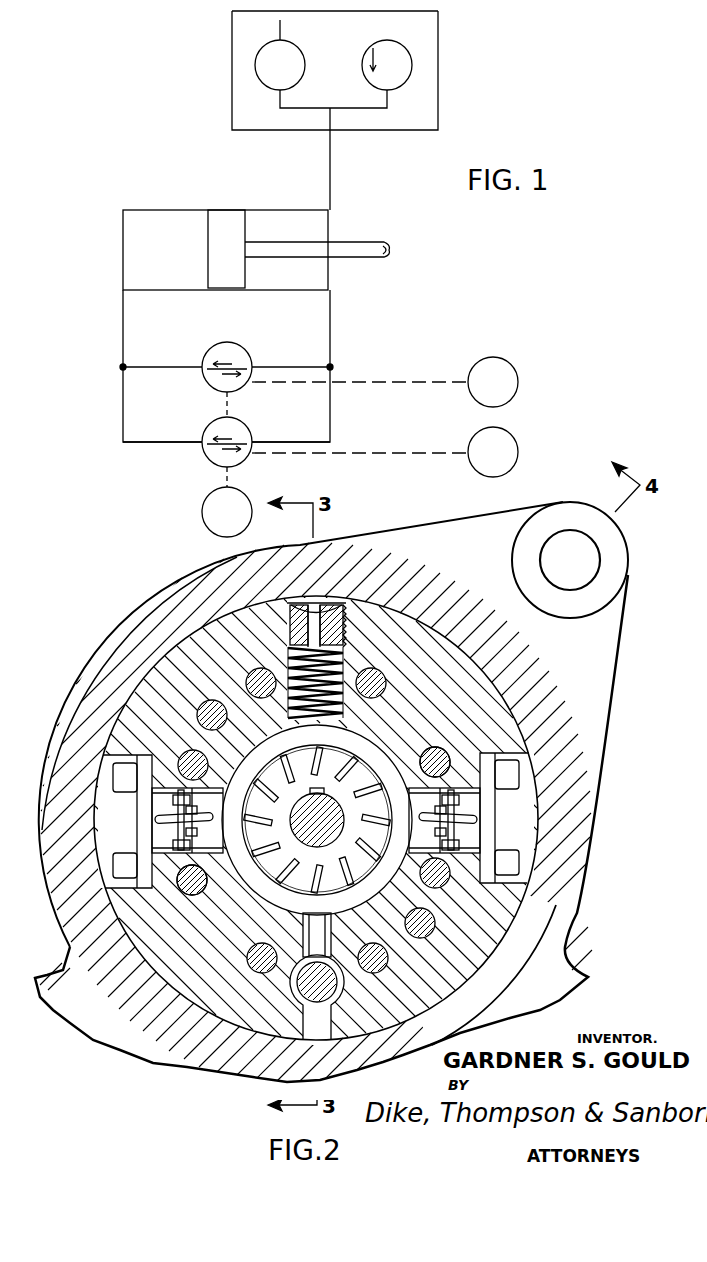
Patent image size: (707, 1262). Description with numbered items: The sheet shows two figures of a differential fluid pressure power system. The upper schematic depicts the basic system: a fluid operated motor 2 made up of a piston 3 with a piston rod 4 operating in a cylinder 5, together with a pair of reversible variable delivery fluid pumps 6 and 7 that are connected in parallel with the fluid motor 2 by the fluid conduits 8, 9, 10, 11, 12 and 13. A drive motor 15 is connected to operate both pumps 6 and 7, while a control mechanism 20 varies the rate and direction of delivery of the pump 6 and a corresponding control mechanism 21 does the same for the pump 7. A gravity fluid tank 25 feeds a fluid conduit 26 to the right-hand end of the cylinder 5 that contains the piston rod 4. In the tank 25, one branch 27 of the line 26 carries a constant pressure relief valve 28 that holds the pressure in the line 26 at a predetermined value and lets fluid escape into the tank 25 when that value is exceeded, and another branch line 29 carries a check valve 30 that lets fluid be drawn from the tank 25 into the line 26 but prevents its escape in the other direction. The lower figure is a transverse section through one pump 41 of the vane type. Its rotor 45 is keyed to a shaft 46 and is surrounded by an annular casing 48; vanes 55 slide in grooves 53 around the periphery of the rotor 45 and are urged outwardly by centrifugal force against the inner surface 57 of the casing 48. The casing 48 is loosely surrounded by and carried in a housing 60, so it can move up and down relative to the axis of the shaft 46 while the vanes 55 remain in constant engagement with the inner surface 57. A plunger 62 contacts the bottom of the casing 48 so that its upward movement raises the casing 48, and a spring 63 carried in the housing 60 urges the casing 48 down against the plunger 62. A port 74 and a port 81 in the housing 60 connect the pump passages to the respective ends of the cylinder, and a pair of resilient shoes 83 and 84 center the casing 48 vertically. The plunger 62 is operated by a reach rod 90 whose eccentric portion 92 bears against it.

In FIG. 1, the fluid operated motor 2 is at (224, 196).
In FIG. 1, the piston 3 is at (208, 246).
In FIG. 2, the piston 3 is at (324, 801).
In FIG. 1, the piston rod 4 is at (273, 240).
In FIG. 1, the cylinder 5 is at (263, 210).
In FIG. 1, the reversible variable delivery fluid pump 6 is at (240, 345).
In FIG. 1, the reversible variable delivery fluid pump 7 is at (240, 419).
In FIG. 1, the fluid conduit 8 is at (123, 320).
In FIG. 1, the fluid conduit 9 is at (177, 367).
In FIG. 1, the fluid conduit 10 is at (163, 442).
In FIG. 1, the fluid conduit 11 is at (330, 320).
In FIG. 1, the fluid conduit 12 is at (303, 367).
In FIG. 1, the fluid conduit 13 is at (303, 442).
In FIG. 1, the drive motor 15 is at (202, 507).
In FIG. 1, the control mechanism 20 is at (513, 366).
In FIG. 1, the control mechanism 21 is at (513, 438).
In FIG. 1, the gravity fluid tank 25 is at (438, 77).
In FIG. 1, the fluid conduit 26 is at (330, 164).
In FIG. 1, the branch 27 is at (305, 101).
In FIG. 1, the constant pressure relief valve 28 is at (305, 58).
In FIG. 1, the branch line 29 is at (357, 108).
In FIG. 1, the check valve 30 is at (400, 88).
In FIG. 2, the pump 41 is at (273, 782).
In FIG. 2, the rotor 45 is at (330, 837).
In FIG. 2, the shaft 46 is at (350, 898).
In FIG. 2, the annular casing 48 is at (417, 958).
In FIG. 2, the grooves 53 is at (305, 764).
In FIG. 2, the vanes 55 is at (316, 746).
In FIG. 2, the inner surface 57 is at (352, 736).
In FIG. 2, the housing 60 is at (483, 697).
In FIG. 2, the plunger 62 is at (317, 932).
In FIG. 2, the spring 63 is at (345, 663).
In FIG. 2, the port 74 is at (425, 749).
In FIG. 2, the port 81 is at (202, 892).
In FIG. 2, the resilient shoe 83 is at (185, 838).
In FIG. 2, the resilient shoe 84 is at (427, 836).
In FIG. 2, the reach rod 90 is at (342, 998).
In FIG. 2, the eccentric portion 92 is at (262, 1046).